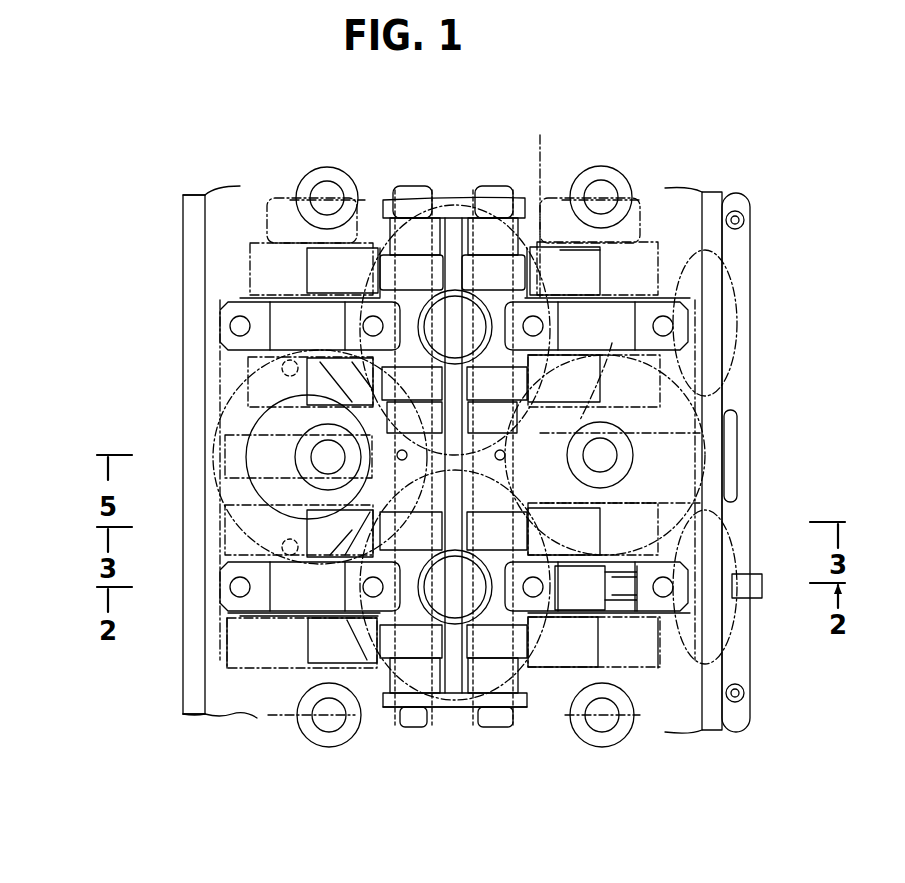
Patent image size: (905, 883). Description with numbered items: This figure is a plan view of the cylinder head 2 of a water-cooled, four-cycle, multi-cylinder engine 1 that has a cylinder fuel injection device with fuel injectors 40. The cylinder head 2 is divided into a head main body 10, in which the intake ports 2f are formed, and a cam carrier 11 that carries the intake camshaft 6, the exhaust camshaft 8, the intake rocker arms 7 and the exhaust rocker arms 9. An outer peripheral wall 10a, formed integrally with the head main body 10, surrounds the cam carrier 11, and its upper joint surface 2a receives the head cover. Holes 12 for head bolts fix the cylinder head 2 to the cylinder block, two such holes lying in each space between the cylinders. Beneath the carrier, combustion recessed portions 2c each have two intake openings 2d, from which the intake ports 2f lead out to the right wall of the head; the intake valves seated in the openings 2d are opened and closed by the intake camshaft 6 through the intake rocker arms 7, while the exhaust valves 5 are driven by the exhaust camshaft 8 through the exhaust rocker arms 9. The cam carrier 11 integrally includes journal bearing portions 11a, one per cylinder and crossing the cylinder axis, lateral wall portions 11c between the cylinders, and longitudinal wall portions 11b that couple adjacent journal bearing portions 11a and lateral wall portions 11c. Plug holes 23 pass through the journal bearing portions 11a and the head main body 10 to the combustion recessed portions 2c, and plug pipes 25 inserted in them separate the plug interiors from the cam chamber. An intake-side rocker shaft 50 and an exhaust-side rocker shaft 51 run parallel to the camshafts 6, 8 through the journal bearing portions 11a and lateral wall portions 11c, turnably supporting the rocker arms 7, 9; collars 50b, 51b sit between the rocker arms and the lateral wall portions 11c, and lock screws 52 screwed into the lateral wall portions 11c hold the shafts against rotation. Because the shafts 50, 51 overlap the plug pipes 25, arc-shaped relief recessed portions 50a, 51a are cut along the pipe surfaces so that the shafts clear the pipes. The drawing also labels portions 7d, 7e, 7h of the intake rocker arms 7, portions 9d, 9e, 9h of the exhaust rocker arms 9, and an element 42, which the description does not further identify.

The engine 1 is at (142, 232).
The cylinder head 2 is at (97, 660).
The upper joint surface 2a is at (185, 325).
The combustion recessed portion 2c is at (400, 805).
The intake opening 2d is at (515, 803).
The intake port 2f is at (735, 290).
The intake camshaft 6 is at (740, 440).
The intake rocker arm 7 is at (602, 265).
The tab of second bus bar 7d is at (491, 220).
The bent portion of second bus bar 7e is at (540, 240).
The terminal portion of second bus bar 7h is at (602, 268).
The exhaust camshaft 8 is at (240, 285).
The exhaust rocker arm 9 is at (305, 262).
The tab of first bus bar 9d is at (412, 222).
The bent portion of first bus bar 9e is at (375, 245).
The terminal portion of first bus bar 9h is at (305, 278).
The head main body 10 is at (180, 643).
The outer peripheral wall 10a is at (180, 705).
The cam carrier 11 is at (280, 613).
The journal bearing portion 11a is at (632, 296).
The longitudinal wall portion 11b is at (442, 733).
The lateral wall portion 11c is at (465, 232).
The head bolt hole 12 is at (330, 195).
The plug hole 23 is at (453, 512).
The plug pipe 25 is at (411, 512).
The fuel injector 40 is at (708, 608).
The bracket 42 is at (233, 402).
The intake-side rocker shaft 50 is at (525, 690).
The relief recessed portion 50a is at (455, 457).
The collar 50b is at (468, 700).
The exhaust-side rocker shaft 51 is at (372, 700).
The relief recessed portion 51a is at (455, 457).
The collar 51b is at (372, 243).
The lock screw 52 is at (452, 417).
The exhaust valve 5 is at (402, 461).